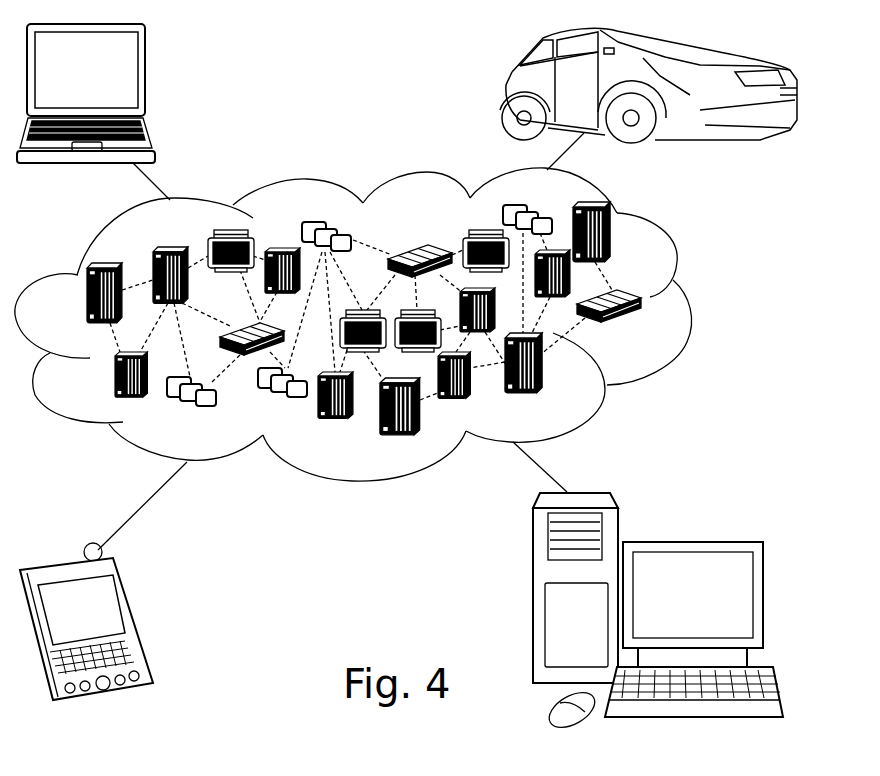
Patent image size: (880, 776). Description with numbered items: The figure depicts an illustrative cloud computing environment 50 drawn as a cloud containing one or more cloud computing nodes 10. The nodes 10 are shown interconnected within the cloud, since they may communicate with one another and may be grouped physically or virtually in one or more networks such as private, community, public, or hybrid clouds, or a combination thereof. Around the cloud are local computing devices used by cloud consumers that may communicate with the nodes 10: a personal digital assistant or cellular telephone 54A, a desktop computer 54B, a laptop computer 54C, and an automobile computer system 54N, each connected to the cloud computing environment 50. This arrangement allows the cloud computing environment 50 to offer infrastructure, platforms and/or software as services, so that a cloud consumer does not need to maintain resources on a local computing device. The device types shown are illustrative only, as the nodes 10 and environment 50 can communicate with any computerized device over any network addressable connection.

The cloud computing node 10 is at (406, 318).
The cloud computing environment 50 is at (692, 306).
The personal digital assistant (PDA) or cellular telephone 54A is at (135, 617).
The desktop computer 54B is at (690, 542).
The laptop computer 54C is at (147, 78).
The automobile computer system 54N is at (510, 90).